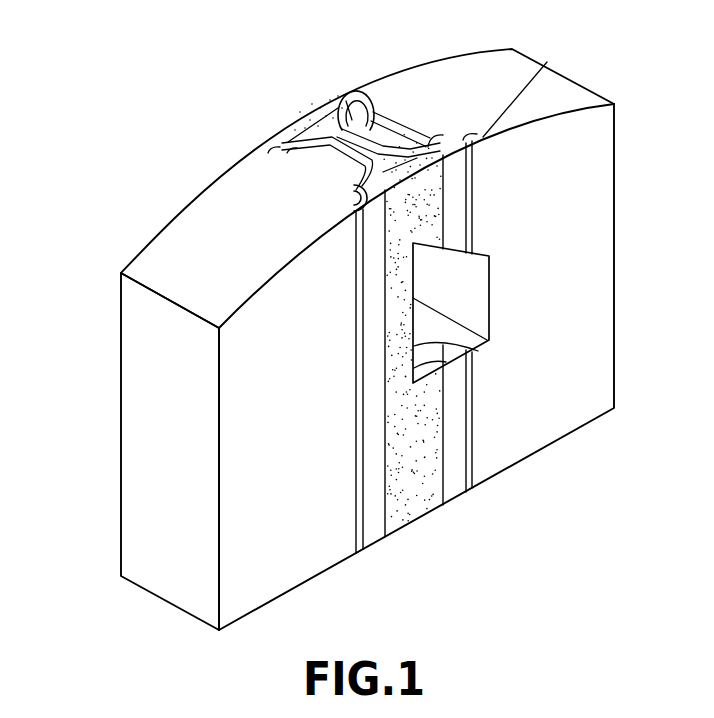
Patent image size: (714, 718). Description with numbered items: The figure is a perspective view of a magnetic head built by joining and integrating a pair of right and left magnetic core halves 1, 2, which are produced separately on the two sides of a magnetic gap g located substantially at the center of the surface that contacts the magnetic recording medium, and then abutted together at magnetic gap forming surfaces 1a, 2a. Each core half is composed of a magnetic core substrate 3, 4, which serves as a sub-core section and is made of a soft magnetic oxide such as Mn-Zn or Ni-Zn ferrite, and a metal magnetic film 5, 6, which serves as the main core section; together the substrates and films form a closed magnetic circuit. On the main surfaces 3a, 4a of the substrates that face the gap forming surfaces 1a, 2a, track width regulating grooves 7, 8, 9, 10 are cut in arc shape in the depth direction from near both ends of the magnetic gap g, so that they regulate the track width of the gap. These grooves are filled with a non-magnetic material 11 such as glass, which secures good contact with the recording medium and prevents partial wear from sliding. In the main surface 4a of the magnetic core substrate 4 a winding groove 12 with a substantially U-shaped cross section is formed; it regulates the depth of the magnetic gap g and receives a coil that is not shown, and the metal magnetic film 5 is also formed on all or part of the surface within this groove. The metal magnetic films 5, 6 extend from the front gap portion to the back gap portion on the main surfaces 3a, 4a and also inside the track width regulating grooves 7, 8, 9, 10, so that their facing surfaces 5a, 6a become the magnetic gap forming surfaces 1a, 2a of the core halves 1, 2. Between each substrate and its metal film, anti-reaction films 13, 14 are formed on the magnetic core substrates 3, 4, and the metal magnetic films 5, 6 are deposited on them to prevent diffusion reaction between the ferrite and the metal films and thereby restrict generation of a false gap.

The magnetic core half 1 is at (109, 480).
The magnetic core half 2 is at (623, 233).
The magnetic core substrate 3 is at (170, 253).
The magnetic core substrate 4 is at (580, 353).
The metal magnetic film 5 is at (280, 137).
The metal magnetic film 6 is at (353, 103).
The track width regulating groove 7 is at (300, 152).
The track width regulating groove 8 is at (357, 213).
The track width regulating groove 9 is at (362, 92).
The track width regulating groove 10 is at (518, 85).
The non-magnetic material 11 is at (427, 211).
The winding groove 12 is at (467, 285).
The anti-reaction film 13 is at (273, 148).
The anti-reaction film 14 is at (490, 131).
The magnetic gap forming surface 1a is at (412, 147).
The magnetic gap forming surface 2a is at (312, 134).
The main surface 3a is at (355, 158).
The main surface 4a is at (347, 122).
The facing surface 5a is at (447, 153).
The facing surface 6a is at (300, 126).
The magnetic gap g is at (383, 127).